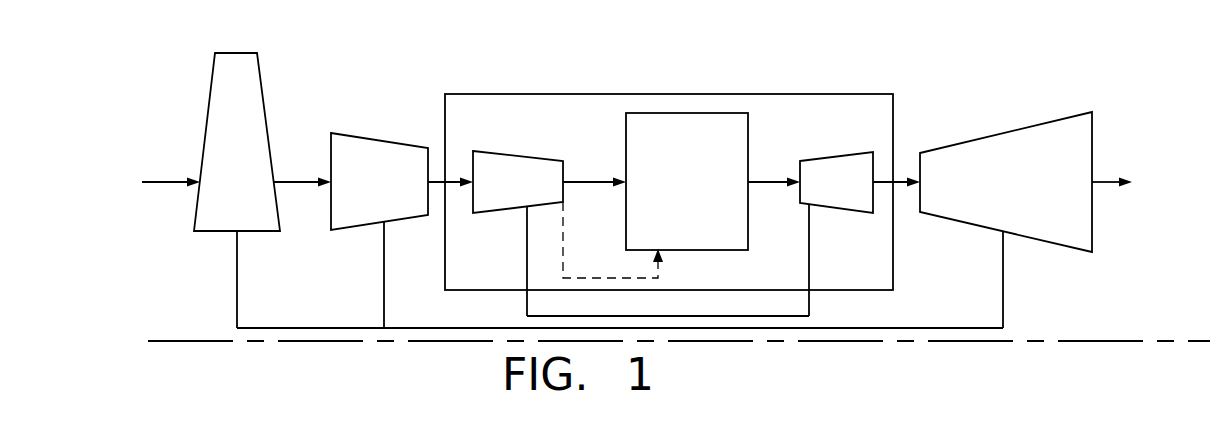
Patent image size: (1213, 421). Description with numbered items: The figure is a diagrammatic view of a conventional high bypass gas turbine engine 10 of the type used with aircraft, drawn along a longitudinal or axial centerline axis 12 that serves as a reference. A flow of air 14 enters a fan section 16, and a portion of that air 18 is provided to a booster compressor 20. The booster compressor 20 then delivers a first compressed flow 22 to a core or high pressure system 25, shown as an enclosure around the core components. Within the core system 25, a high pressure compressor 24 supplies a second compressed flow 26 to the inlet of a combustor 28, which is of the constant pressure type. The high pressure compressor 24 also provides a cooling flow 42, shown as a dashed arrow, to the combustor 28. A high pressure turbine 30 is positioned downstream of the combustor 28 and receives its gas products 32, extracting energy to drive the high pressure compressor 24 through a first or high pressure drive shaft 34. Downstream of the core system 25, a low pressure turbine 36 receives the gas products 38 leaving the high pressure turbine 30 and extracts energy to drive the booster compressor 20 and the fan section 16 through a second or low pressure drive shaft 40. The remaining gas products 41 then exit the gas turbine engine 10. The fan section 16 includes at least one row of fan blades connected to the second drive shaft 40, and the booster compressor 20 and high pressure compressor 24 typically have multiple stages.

The gas turbine engine 10 is at (1048, 86).
The longitudinal or axial centerline axis 12 is at (1067, 341).
The flow of air 14 is at (163, 181).
The fan section 16 is at (221, 187).
The portion of air flow 18 is at (289, 181).
The booster compressor 20 is at (362, 187).
The first compressed flow 22 is at (431, 179).
The high pressure compressor 24 is at (504, 192).
The core or high pressure system 25 is at (708, 90).
The second compressed flow 26 is at (585, 180).
The combustor 28 is at (671, 192).
The high pressure turbine 30 is at (821, 194).
The gas products 32 is at (762, 181).
The first or high pressure drive shaft 34 is at (810, 274).
The low pressure turbine 36 is at (997, 192).
The gas products 38 is at (885, 181).
The second or low pressure drive shaft 40 is at (1003, 278).
The remaining gas products 41 is at (1100, 181).
The cooling flow 42 is at (623, 278).